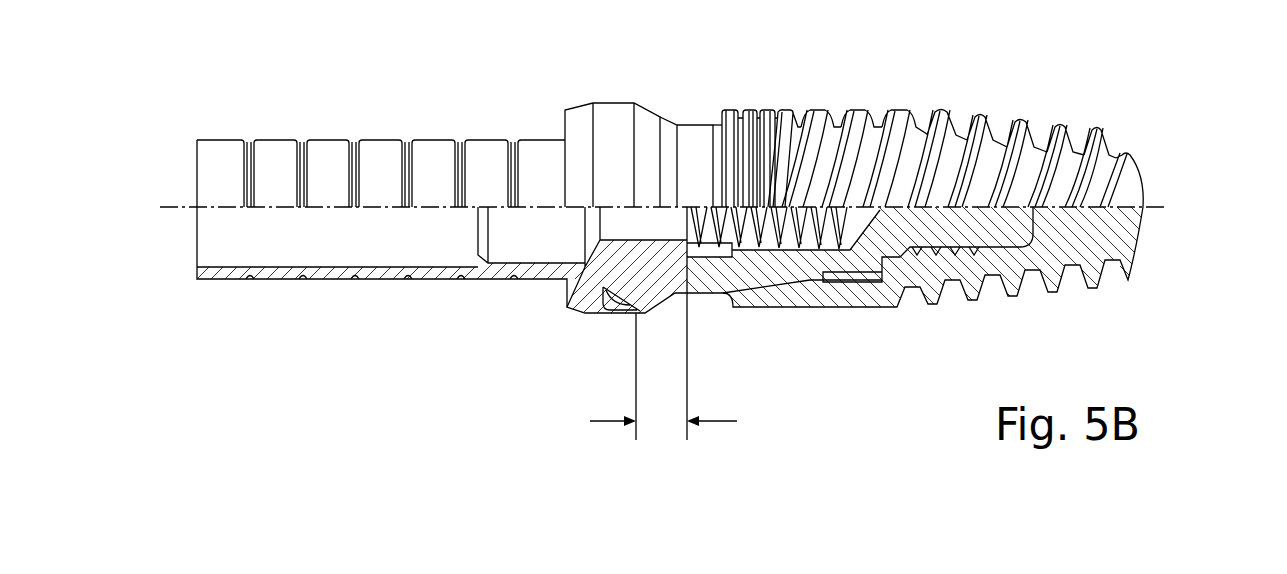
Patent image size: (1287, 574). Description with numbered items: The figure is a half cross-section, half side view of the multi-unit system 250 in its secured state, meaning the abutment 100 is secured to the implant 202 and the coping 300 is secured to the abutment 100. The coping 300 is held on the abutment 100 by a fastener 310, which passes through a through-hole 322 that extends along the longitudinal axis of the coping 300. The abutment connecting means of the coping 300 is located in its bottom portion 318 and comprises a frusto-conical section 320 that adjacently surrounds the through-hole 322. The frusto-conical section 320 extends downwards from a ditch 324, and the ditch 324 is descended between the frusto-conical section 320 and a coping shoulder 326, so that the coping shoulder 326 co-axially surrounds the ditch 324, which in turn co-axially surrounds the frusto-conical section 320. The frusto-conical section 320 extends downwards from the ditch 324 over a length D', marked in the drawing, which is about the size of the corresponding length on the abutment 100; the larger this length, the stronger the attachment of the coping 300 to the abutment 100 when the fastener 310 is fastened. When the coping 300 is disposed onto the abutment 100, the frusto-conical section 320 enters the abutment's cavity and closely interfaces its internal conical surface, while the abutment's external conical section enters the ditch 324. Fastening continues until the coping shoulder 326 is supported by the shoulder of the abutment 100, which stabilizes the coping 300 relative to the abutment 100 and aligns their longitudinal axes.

The abutment 100 is at (697, 120).
The implant 202 is at (940, 110).
The multi-unit system 250 is at (374, 86).
The coping 300 is at (222, 138).
The fastener 310 is at (478, 238).
The bottom portion 318 is at (605, 84).
The frusto-conical section 320 is at (663, 268).
The through-hole 322 is at (660, 243).
The ditch 324 is at (637, 280).
The coping shoulder 326 is at (640, 302).